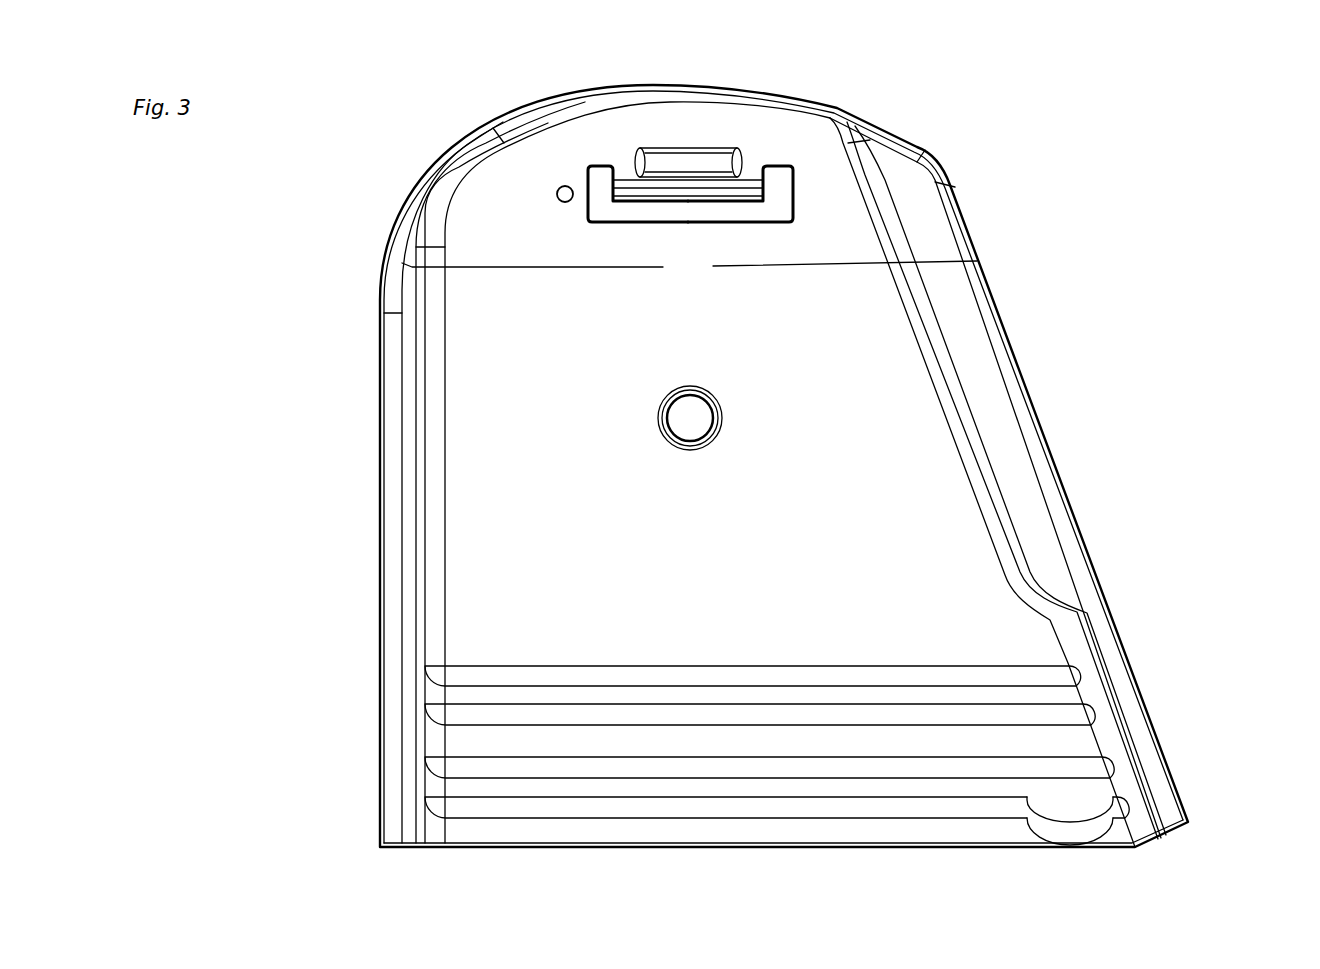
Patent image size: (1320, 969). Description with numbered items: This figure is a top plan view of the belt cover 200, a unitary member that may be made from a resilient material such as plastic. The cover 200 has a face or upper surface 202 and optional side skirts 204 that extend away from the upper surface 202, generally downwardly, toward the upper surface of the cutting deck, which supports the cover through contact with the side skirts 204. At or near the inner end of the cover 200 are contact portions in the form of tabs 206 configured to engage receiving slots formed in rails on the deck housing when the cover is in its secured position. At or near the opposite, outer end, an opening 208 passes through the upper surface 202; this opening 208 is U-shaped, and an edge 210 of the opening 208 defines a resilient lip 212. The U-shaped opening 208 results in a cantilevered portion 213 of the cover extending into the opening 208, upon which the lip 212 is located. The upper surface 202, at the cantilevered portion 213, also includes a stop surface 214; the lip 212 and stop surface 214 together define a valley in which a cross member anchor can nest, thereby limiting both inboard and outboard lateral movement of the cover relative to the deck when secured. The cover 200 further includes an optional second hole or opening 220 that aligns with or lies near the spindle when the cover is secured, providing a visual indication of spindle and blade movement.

The cover 200 is at (1028, 348).
The upper surface 202 is at (855, 333).
The side skirts 204 is at (381, 520).
The tabs 206 is at (390, 870).
The opening 208 is at (780, 184).
The edge 210 is at (617, 168).
The resilient lip 212 is at (686, 195).
The cantilevered portion 213 is at (598, 183).
The stop surface 214 is at (709, 158).
The second opening 220 is at (710, 437).